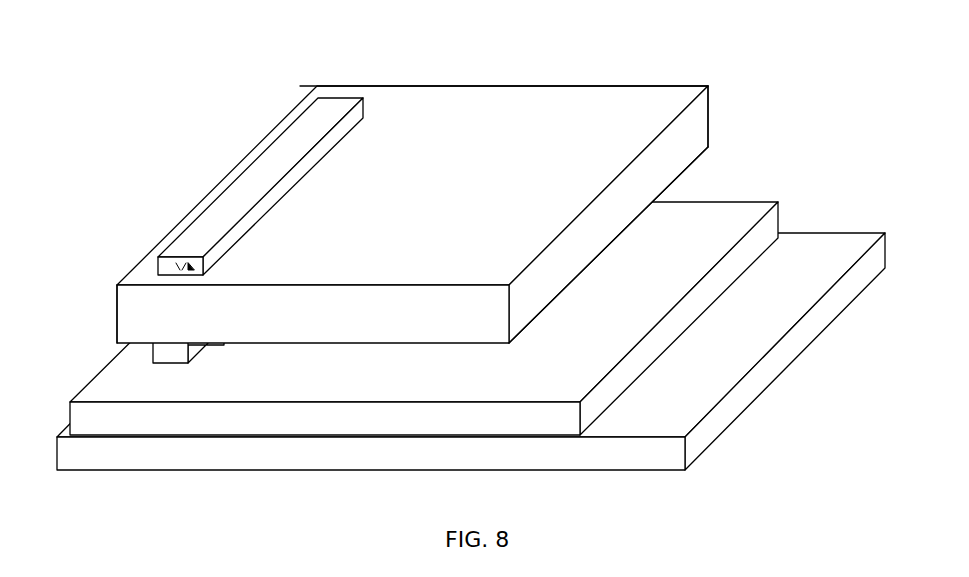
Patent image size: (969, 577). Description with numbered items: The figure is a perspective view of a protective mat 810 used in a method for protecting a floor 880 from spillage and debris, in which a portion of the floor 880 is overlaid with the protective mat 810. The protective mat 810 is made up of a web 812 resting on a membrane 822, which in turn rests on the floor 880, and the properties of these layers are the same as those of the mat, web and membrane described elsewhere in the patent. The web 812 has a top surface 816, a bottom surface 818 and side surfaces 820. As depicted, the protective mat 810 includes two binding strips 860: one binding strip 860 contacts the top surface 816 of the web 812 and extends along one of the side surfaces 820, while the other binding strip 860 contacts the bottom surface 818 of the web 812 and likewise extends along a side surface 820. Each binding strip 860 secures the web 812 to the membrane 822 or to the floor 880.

The protective mat 810 is at (414, 66).
The web 812 is at (450, 183).
The top surface 816 is at (615, 117).
The bottom surface 818 is at (698, 157).
The side surface 820 is at (115, 308).
The membrane 822 is at (642, 313).
The binding strip 860 is at (197, 250).
The floor 880 is at (758, 353).